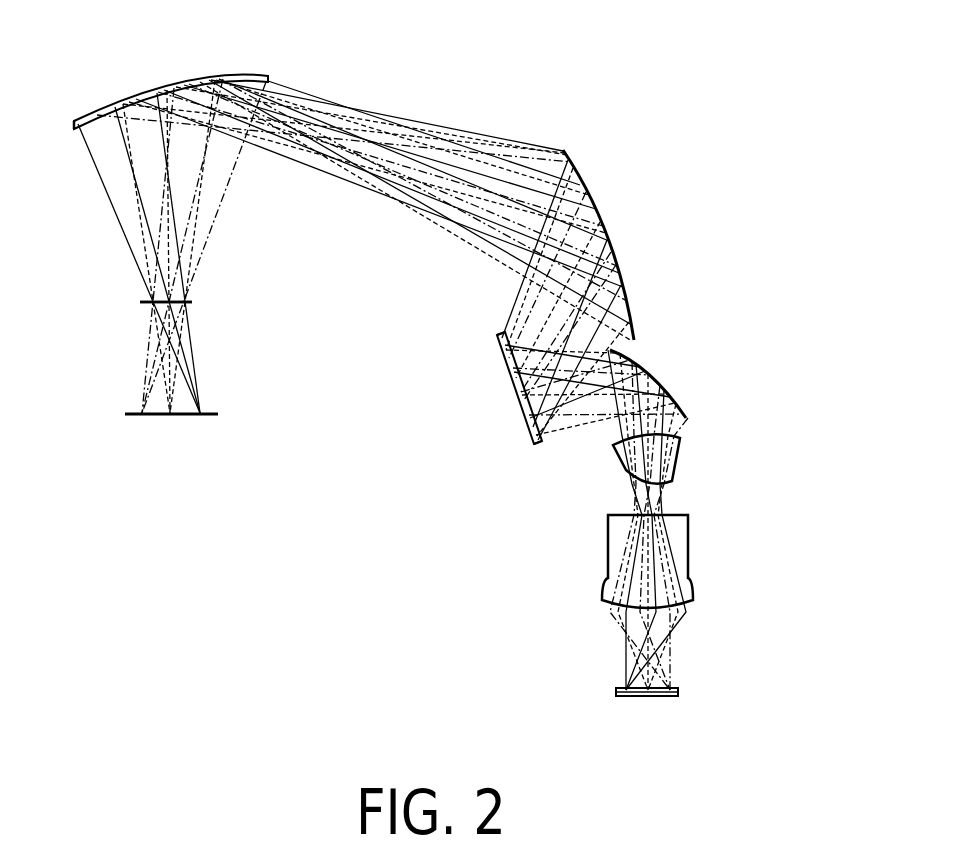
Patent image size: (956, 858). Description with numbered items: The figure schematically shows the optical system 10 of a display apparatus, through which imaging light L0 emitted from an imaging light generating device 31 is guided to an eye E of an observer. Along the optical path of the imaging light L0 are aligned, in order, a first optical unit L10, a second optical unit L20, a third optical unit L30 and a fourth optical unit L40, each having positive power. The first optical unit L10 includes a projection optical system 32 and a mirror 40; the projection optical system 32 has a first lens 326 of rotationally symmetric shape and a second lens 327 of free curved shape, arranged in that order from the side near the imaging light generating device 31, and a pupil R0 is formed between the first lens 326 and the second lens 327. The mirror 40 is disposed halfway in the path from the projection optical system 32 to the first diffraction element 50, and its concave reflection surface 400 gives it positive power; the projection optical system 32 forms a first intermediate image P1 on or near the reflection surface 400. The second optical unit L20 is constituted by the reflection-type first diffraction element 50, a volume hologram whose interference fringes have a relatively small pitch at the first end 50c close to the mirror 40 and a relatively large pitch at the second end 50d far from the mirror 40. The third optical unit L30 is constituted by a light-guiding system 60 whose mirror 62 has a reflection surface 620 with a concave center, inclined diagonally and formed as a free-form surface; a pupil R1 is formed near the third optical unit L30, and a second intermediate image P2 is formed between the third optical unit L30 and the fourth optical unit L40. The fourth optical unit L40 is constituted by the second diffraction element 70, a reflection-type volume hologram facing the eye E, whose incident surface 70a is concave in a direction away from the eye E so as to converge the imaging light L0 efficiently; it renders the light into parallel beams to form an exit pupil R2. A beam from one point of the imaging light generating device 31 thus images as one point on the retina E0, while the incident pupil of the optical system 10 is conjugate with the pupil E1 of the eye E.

The optical system 10 is at (628, 74).
The fourth optical unit L40 is at (185, 112).
The second diffraction element 70 is at (205, 76).
The incident surface 70a is at (90, 130).
The second intermediate image P2 is at (240, 168).
The exit pupil R2 is at (187, 305).
The eye E is at (70, 300).
The pupil E1 is at (142, 303).
The retina E0 is at (124, 415).
The third optical unit L30 is at (654, 245).
The light-guiding system 60 is at (654, 245).
The mirror 62 is at (654, 245).
The reflection surface 620 is at (590, 190).
The pupil R1 is at (505, 271).
The second optical unit L20 is at (484, 406).
The first diffraction element 50 is at (530, 442).
The second end 50d is at (500, 332).
The first end 50c is at (541, 447).
The mirror 40 is at (641, 390).
The reflection surface 400 is at (623, 358).
The first intermediate image P1 is at (690, 426).
The first optical unit L10 is at (709, 521).
The projection optical system 32 is at (750, 442).
The second lens 327 is at (683, 455).
The first lens 326 is at (689, 542).
The pupil R0 is at (618, 500).
The imaging light L0 is at (683, 645).
The imaging light generating device 31 is at (663, 698).